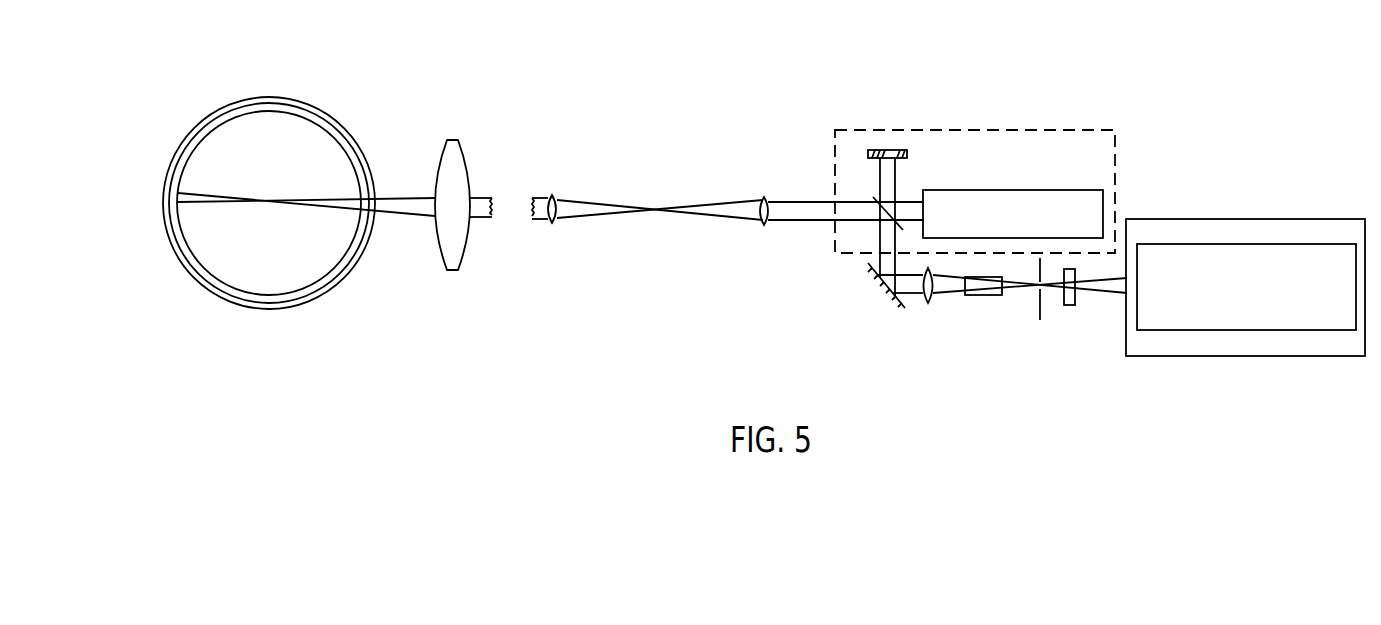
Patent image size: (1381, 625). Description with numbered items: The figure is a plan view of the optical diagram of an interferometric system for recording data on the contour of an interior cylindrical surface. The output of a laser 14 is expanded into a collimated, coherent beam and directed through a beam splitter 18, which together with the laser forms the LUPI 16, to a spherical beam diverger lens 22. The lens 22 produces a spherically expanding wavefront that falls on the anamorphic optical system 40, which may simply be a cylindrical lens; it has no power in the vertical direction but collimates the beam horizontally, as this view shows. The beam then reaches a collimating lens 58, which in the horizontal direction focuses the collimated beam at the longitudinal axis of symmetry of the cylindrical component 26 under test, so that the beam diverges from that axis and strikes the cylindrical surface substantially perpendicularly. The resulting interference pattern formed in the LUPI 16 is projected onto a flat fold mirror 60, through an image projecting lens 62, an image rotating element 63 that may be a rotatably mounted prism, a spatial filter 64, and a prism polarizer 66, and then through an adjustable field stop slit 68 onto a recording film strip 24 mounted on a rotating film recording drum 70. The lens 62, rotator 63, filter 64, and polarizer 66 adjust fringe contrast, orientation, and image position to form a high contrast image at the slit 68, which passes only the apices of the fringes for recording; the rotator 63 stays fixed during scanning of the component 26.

The cylindrical component 26 is at (272, 107).
The collimating lens 58 is at (452, 140).
The anamorphic optical system 40 is at (553, 196).
The spherical beam diverger lens 22 is at (759, 223).
The LUPI 16 is at (1047, 176).
The beam splitter 18 is at (875, 198).
The laser 14 is at (1018, 227).
The flat fold mirror 60 is at (868, 266).
The image projecting lens 62 is at (925, 304).
The image rotating element 63 is at (973, 297).
The spatial filter 64 is at (1038, 311).
The prism polarizer 66 is at (1068, 305).
The adjustable field stop slit 68 is at (1124, 289).
The recording film strip 24 is at (1135, 293).
The rotating film recording drum 70 is at (1325, 219).